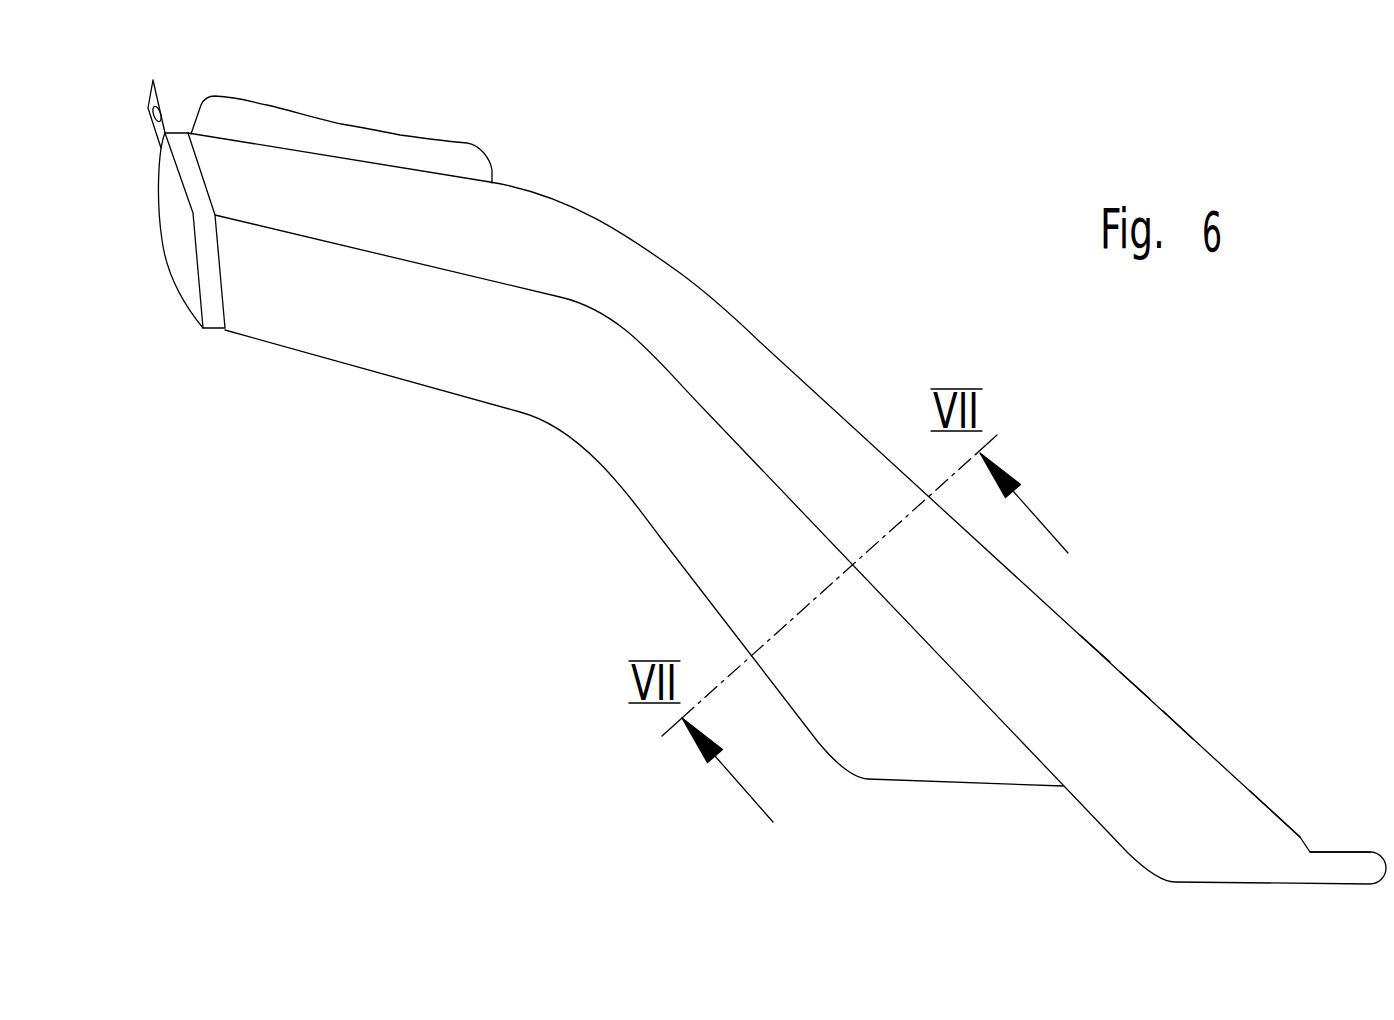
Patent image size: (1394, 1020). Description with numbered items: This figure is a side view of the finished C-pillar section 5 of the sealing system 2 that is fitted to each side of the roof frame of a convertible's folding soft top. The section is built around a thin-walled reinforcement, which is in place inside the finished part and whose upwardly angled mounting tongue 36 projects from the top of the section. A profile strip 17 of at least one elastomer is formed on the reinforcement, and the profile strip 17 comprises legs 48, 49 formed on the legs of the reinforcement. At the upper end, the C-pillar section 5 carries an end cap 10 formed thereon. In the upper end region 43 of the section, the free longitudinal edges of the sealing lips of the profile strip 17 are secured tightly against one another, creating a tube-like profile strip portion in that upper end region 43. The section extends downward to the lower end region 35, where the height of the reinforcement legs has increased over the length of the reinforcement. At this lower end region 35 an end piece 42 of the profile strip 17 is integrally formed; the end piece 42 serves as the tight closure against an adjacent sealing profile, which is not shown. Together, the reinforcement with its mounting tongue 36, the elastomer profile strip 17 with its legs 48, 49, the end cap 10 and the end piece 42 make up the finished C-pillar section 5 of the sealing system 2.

The end cap 10 is at (213, 332).
The mounting tongue 36 is at (160, 92).
The upper end region 43 is at (347, 122).
The leg 49 is at (705, 367).
The leg 48 is at (647, 438).
The C-pillar section 5 is at (1095, 648).
The sealing system 2 is at (1135, 687).
The profile strip 17 is at (1178, 727).
The lower end region 35 is at (1265, 780).
The end piece 42 is at (1293, 835).